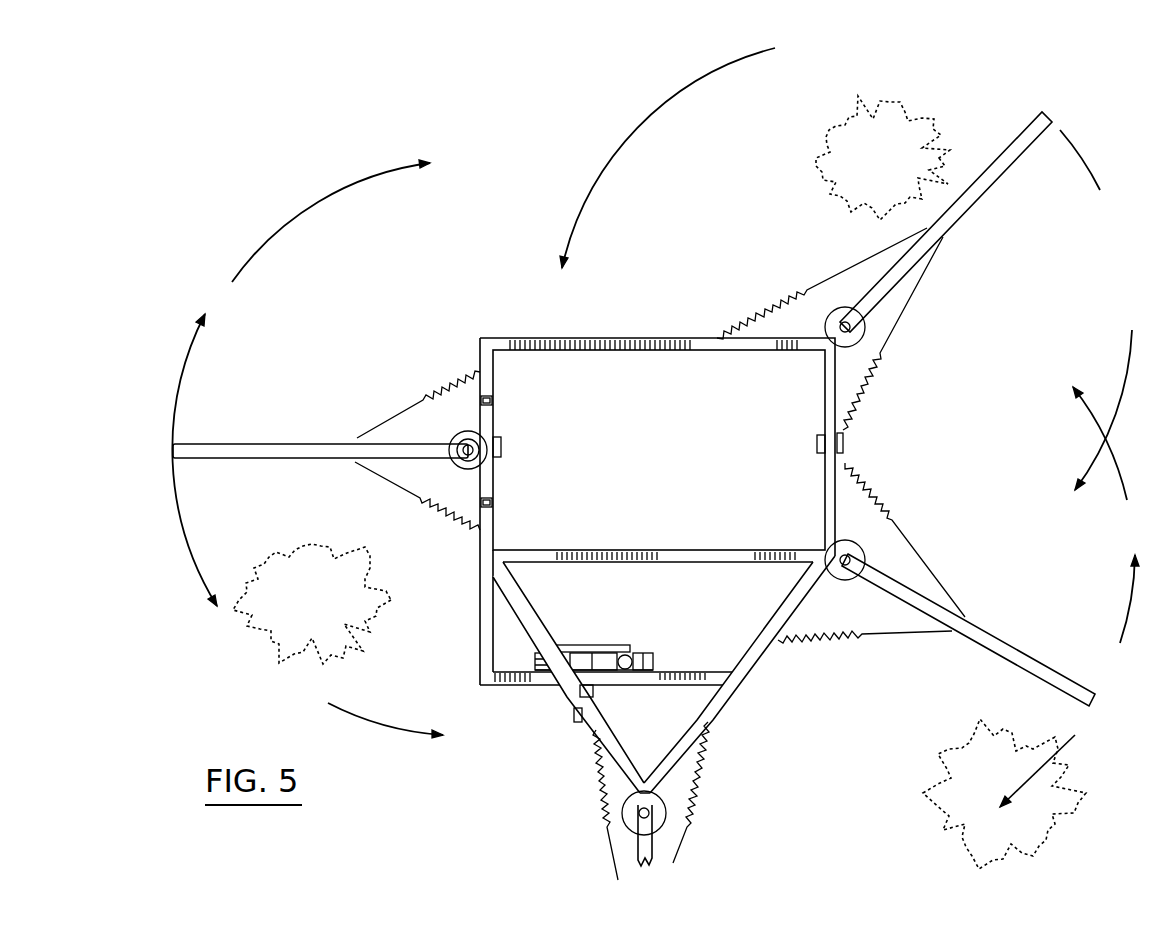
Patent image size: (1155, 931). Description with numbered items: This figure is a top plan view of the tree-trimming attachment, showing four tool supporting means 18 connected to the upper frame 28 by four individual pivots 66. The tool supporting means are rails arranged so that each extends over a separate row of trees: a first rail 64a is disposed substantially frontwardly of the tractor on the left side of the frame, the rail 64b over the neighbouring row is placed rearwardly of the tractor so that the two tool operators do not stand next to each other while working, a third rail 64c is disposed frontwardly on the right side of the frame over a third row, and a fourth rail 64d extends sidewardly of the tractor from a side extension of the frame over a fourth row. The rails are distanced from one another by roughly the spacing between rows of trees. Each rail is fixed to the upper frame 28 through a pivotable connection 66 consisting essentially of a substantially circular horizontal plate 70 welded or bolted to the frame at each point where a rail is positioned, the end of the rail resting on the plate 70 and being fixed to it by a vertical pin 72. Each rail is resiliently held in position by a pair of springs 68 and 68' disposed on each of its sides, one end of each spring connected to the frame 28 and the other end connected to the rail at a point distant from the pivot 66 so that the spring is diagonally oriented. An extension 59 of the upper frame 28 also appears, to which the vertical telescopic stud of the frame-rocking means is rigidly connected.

The tool supporting means 18 is at (277, 440).
The upper frame 28 is at (705, 550).
The extension 59 is at (752, 660).
The first rail 64a is at (1009, 160).
The rail 64b is at (292, 450).
The third rail 64c is at (1010, 655).
The fourth rail 64d is at (648, 847).
The pivot 66 is at (475, 470).
The spring 68 is at (417, 515).
The spring 68' is at (418, 392).
The horizontal plate 70 is at (470, 433).
The vertical pin 72 is at (461, 463).